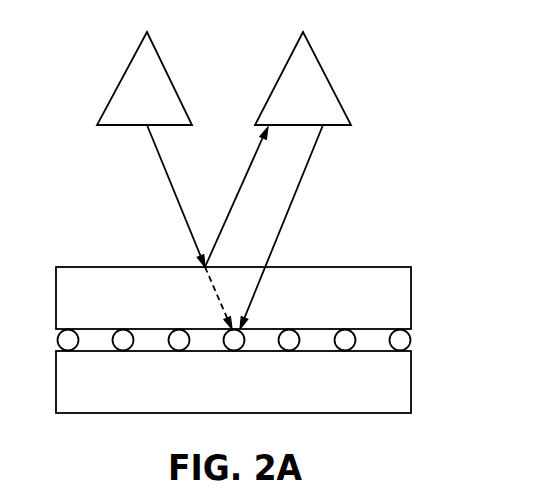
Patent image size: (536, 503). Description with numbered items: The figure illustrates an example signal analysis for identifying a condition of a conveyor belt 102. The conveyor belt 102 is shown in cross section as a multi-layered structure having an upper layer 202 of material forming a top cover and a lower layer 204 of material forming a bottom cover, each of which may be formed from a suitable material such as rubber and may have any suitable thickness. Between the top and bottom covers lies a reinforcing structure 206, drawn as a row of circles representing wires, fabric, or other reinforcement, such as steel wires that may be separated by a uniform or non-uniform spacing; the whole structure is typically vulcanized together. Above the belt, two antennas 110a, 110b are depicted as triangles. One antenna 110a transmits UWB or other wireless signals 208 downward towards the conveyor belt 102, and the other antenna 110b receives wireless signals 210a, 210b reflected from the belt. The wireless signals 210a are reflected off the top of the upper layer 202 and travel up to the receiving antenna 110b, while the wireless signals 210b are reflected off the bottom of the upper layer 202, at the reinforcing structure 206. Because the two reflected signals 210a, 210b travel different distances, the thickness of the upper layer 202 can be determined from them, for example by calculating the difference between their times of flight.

The antenna 110a is at (117, 83).
The antenna 110b is at (331, 83).
The wireless signals 208 is at (175, 201).
The wireless signals 210a is at (242, 189).
The wireless signals 210b is at (293, 203).
The conveyor belt 102 is at (253, 321).
The upper layer 202 is at (405, 300).
The lower layer 204 is at (405, 407).
The reinforcing structure 206 is at (412, 341).